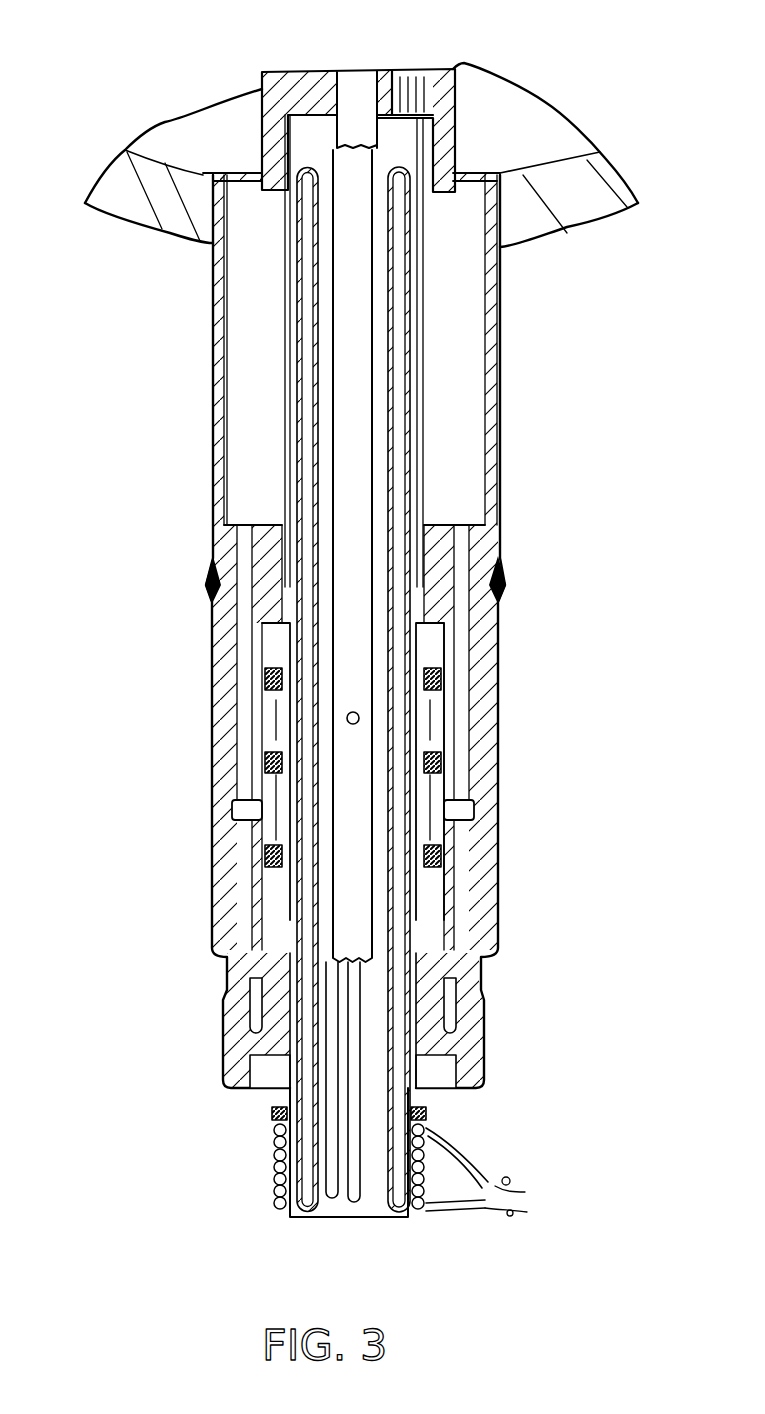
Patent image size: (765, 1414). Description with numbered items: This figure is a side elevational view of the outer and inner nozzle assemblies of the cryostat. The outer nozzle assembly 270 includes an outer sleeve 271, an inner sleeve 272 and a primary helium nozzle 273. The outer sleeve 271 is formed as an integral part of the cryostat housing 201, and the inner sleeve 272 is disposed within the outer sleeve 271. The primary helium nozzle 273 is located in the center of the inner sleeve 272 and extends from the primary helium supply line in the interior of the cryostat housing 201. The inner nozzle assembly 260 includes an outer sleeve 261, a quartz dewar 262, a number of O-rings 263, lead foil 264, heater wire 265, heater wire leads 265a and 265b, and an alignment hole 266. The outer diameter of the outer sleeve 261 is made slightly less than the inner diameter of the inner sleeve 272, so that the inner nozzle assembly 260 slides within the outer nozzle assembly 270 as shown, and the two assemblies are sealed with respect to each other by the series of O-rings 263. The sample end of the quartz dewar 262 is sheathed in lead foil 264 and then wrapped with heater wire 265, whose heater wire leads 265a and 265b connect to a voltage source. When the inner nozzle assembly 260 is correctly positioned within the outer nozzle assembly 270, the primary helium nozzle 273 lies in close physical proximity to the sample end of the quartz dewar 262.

The cryostat housing 201 is at (598, 224).
The outer nozzle assembly 270 is at (197, 410).
The outer sleeve 271 is at (213, 262).
The inner sleeve 272 is at (428, 433).
The primary helium nozzle 273 is at (357, 92).
The inner nozzle assembly 260 is at (248, 863).
The outer sleeve 261 is at (263, 888).
The quartz dewar 262 is at (300, 963).
The O-rings 263 is at (440, 858).
The lead foil 264 is at (288, 1216).
The heater wire 265 is at (273, 1180).
The heater wire lead 265a is at (487, 1184).
The heater wire lead 265b is at (465, 1210).
The alignment hole 266 is at (346, 716).